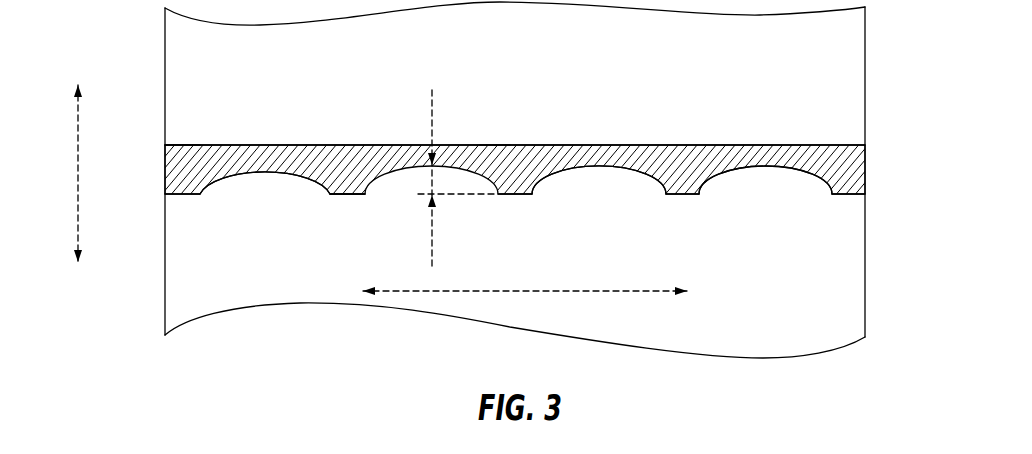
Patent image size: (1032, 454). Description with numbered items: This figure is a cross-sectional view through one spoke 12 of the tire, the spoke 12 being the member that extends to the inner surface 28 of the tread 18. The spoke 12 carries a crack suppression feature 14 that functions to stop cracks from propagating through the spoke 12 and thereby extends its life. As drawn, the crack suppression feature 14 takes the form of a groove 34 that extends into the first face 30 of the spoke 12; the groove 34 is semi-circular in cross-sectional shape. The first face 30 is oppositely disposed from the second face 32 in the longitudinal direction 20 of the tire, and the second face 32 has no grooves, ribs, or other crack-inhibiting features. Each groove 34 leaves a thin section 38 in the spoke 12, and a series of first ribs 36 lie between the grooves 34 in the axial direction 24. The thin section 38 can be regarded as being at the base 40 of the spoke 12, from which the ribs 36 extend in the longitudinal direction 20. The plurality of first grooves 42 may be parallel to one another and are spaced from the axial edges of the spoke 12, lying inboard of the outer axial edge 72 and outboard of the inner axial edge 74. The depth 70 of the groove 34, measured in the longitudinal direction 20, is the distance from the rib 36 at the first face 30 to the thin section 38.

The spoke 12 is at (853, 163).
The crack suppression feature 14 is at (783, 203).
The tread 18 is at (783, 341).
The longitudinal direction 20 is at (77, 163).
The axial direction 24 is at (525, 292).
The inner surface 28 is at (837, 50).
The first face 30 is at (342, 196).
The second face 32 is at (492, 134).
The groove 34 is at (260, 195).
The first ribs 36 is at (353, 190).
The thin section 38 is at (260, 146).
The base 40 is at (190, 148).
The first grooves 42 is at (598, 191).
The depth 70 is at (433, 230).
The outer axial edge 72 is at (165, 167).
The inner axial edge 74 is at (865, 183).